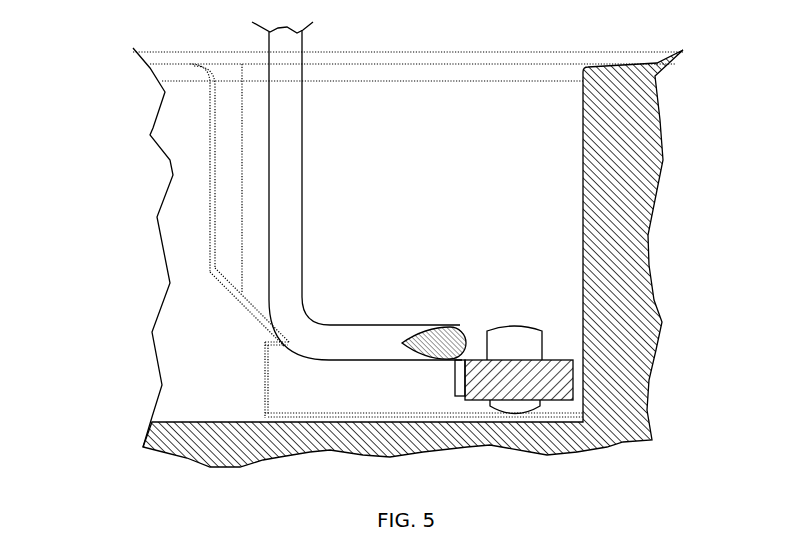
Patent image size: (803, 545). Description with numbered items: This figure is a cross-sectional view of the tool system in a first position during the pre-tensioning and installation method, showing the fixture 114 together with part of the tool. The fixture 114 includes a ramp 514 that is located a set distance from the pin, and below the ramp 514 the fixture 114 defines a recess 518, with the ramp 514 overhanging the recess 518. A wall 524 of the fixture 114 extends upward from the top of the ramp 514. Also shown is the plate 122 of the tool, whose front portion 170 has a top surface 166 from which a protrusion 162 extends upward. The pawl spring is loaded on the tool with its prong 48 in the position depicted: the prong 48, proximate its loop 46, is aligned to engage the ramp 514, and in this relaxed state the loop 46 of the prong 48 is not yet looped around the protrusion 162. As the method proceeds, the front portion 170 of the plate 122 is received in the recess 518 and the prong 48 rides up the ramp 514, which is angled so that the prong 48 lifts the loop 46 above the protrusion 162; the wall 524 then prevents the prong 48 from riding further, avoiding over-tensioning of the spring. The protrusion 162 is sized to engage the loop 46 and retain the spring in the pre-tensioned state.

The fixture 114 is at (170, 58).
The wall 524 is at (212, 157).
The ramp 514 is at (253, 308).
The recess 518 is at (265, 377).
The prong 48 is at (302, 118).
The loop 46 is at (457, 325).
The protrusion 162 is at (515, 327).
The top surface 166 is at (560, 352).
The front portion 170 is at (448, 382).
The plate 122 is at (453, 395).